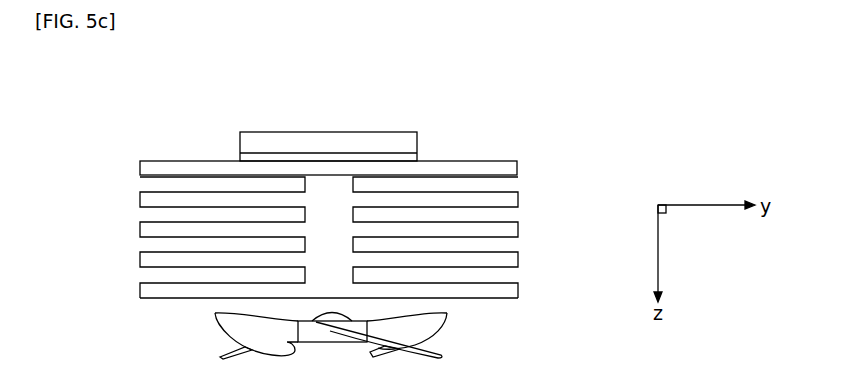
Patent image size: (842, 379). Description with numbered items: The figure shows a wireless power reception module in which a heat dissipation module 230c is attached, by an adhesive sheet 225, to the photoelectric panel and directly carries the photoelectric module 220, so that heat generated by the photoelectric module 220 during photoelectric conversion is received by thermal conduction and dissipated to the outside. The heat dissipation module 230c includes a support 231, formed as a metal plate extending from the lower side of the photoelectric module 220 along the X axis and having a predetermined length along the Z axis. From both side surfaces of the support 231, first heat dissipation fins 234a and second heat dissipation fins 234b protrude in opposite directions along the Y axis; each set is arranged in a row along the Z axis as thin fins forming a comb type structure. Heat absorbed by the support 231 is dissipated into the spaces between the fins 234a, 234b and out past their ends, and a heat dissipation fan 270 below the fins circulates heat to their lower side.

The photoelectric module 220 is at (387, 135).
The adhesive sheet 225 is at (410, 158).
The heat dissipation module 230c is at (339, 216).
The support 231 is at (148, 164).
The first heat dissipation fin 234a is at (133, 191).
The second heat dissipation fin 234b is at (523, 191).
The heat dissipation fan 270 is at (427, 324).